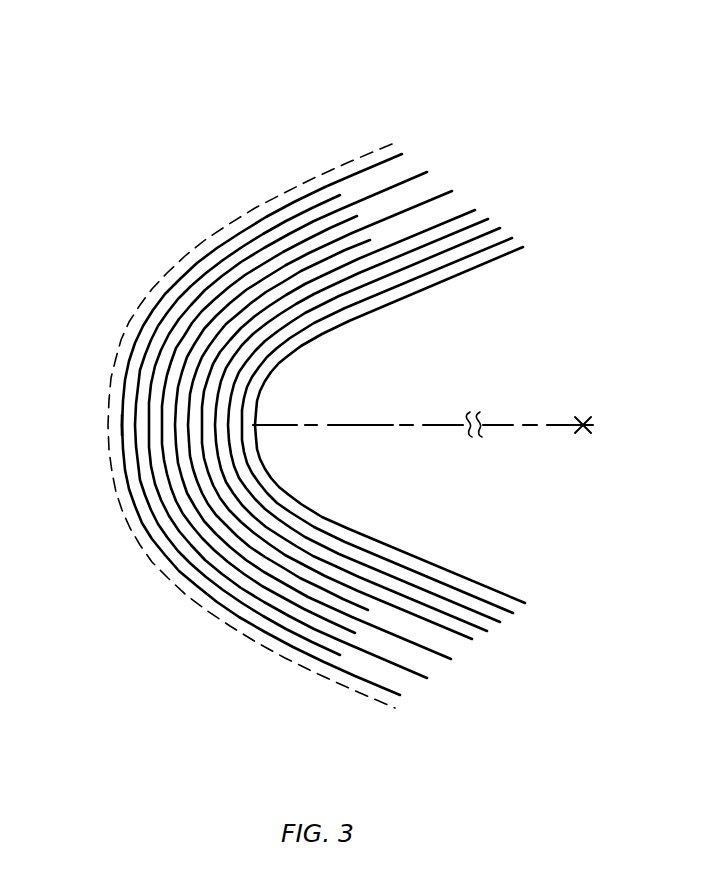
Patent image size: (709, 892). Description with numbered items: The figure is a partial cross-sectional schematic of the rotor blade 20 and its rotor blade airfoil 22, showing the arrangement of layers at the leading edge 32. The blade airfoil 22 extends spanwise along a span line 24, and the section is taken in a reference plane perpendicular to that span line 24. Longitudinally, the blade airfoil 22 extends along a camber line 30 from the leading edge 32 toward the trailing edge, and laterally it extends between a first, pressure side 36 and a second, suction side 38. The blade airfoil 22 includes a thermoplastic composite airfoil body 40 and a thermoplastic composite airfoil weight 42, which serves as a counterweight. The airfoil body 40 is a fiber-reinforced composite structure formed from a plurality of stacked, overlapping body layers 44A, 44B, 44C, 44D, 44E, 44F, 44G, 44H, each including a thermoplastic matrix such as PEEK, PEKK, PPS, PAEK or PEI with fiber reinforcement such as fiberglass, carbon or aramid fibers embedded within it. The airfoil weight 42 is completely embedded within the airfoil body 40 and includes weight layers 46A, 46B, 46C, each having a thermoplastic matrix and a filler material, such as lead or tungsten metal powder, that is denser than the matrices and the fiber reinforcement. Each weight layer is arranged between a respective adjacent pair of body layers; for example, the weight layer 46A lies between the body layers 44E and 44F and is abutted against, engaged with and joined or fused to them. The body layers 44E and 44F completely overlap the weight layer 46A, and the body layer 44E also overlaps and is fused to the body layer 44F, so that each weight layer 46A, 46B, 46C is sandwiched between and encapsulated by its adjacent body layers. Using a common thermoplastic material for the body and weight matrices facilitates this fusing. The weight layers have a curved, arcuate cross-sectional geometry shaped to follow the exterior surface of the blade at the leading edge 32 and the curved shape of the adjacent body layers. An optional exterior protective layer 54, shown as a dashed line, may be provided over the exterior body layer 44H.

The rotor blade 20 is at (323, 399).
The rotor blade airfoil 22 is at (323, 399).
The span line 24 is at (584, 420).
The camber line 30 is at (430, 425).
The leading edge 32 is at (122, 425).
The first side 36 is at (358, 682).
The second side 38 is at (371, 165).
The thermoplastic composite airfoil body 40 is at (527, 215).
The thermoplastic composite airfoil weight 42 is at (163, 297).
The body layer 44A is at (407, 555).
The body layer 44B is at (448, 585).
The body layer 44C is at (485, 612).
The body layer 44D is at (478, 627).
The body layer 44E is at (450, 630).
The body layer 44F is at (432, 652).
The body layer 44G is at (410, 672).
The body layer 44H is at (380, 690).
The weight layer 46A is at (328, 590).
The weight layer 46B is at (340, 630).
The weight layer 46C is at (283, 638).
The exterior protective layer 54 is at (122, 347).